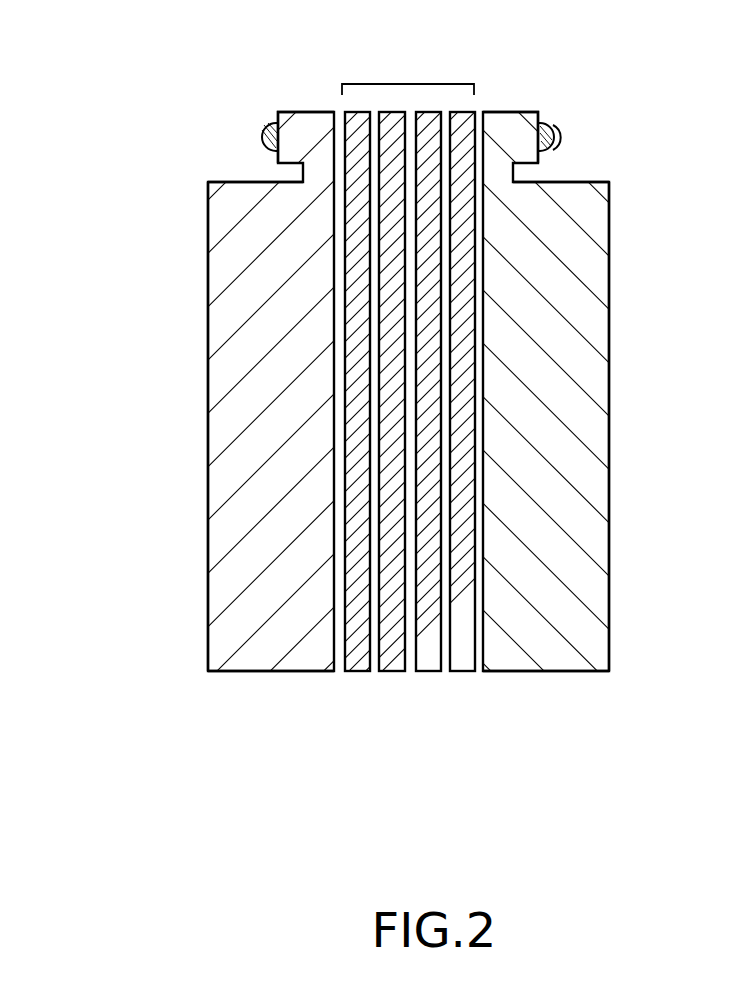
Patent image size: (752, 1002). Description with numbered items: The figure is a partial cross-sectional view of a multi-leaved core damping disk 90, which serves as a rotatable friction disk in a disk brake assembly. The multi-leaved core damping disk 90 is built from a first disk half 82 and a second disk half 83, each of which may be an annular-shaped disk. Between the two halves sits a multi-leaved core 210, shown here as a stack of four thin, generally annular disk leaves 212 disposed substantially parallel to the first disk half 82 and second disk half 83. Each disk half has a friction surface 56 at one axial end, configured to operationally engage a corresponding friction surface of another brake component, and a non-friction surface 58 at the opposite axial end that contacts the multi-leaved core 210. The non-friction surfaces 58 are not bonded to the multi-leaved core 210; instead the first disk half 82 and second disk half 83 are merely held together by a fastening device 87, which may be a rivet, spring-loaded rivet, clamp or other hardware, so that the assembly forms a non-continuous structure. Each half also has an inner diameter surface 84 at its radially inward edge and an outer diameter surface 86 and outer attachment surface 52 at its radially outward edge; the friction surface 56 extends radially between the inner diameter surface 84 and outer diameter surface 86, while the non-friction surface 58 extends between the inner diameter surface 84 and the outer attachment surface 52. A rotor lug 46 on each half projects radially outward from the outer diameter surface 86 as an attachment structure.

The multi-leaved core damping disk 90 is at (87, 86).
The first disk half 82 is at (206, 168).
The second disk half 83 is at (615, 160).
The rotor lug 46 is at (313, 88).
The outer attachment surface 52 is at (293, 112).
The fastening device 87 is at (552, 128).
The outer diameter surface 86 is at (250, 182).
The non-friction surface 58 is at (334, 221).
The friction surface 56 is at (208, 380).
The inner diameter surface 84 is at (278, 671).
The multi-leaved core 210 is at (412, 83).
The disk leaf 212 is at (353, 672).